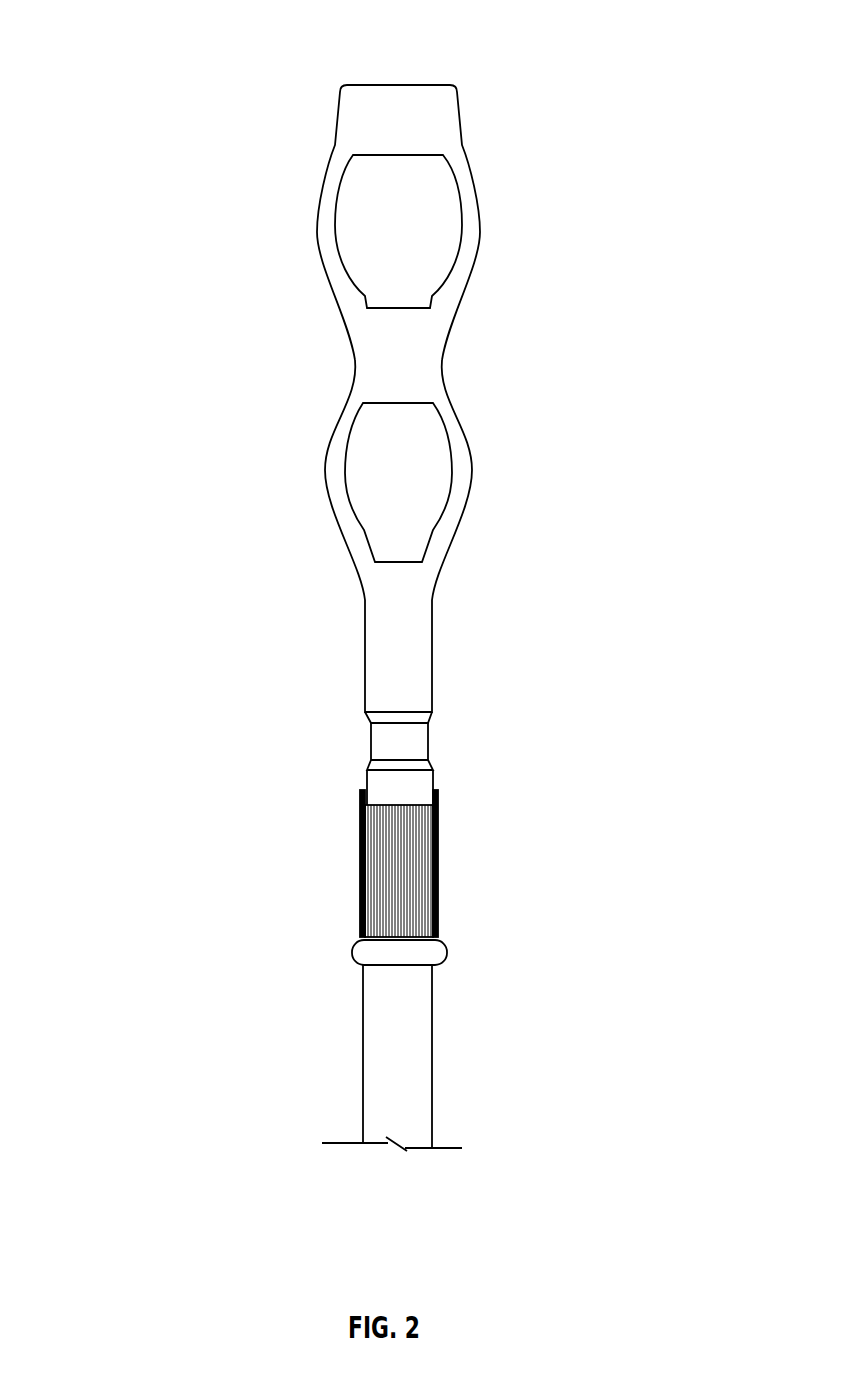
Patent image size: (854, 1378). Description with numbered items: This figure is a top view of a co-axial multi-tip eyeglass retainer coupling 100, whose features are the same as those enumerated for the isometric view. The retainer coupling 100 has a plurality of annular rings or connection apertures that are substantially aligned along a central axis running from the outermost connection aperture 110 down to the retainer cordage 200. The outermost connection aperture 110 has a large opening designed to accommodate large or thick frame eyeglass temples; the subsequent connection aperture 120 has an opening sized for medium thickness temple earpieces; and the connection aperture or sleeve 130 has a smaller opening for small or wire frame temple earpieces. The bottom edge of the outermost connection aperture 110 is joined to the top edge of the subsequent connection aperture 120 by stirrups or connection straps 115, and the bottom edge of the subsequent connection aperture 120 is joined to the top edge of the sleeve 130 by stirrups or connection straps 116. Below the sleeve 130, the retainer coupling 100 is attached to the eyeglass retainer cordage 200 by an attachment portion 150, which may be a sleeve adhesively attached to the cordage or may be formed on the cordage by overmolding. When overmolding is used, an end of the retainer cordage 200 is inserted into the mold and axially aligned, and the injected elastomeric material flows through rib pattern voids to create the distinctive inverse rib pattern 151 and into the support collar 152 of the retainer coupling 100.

The co-axial multi-tip eyeglass retainer coupling 100 is at (378, 483).
The outermost connection aperture 110 is at (442, 120).
The connection straps 115 is at (304, 262).
The connection straps 116 is at (309, 470).
The subsequent connection aperture 120 is at (425, 362).
The connection aperture or sleeve 130 is at (414, 646).
The attachment portion 150 is at (409, 818).
The inverse rib pattern 151 is at (346, 842).
The support collar 152 is at (336, 947).
The retainer cordage 200 is at (427, 1064).